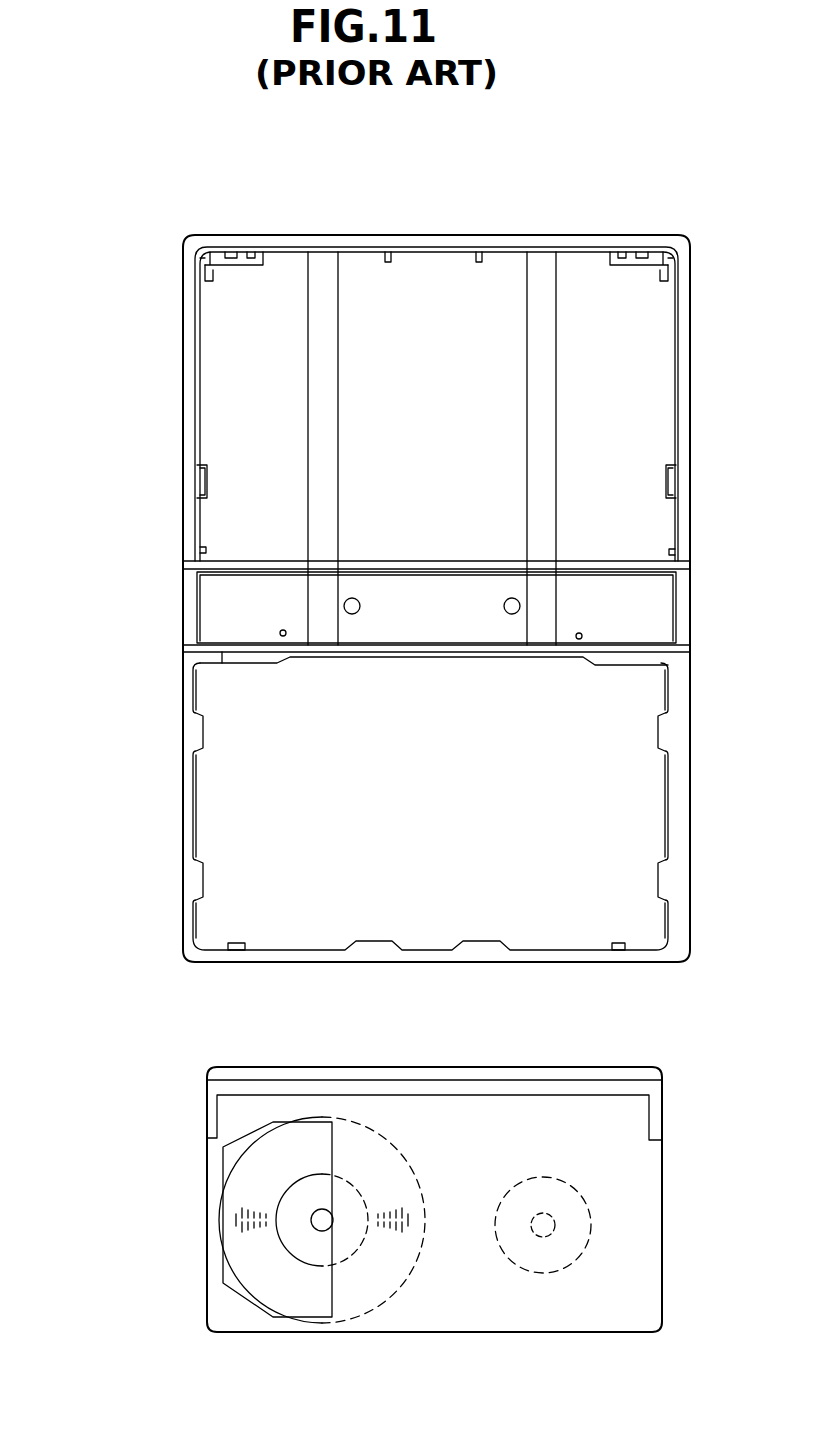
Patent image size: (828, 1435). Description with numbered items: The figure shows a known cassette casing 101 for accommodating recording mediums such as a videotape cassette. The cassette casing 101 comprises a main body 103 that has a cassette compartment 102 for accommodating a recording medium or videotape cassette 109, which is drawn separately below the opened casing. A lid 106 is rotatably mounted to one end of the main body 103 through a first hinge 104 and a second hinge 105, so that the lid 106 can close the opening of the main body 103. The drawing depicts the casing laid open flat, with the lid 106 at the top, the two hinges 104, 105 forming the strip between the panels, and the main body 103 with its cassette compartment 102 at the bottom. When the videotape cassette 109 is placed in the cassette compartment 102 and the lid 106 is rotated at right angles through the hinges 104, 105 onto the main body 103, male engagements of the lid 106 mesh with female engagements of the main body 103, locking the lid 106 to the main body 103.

The cassette casing 101 is at (172, 932).
The cassette compartment 102 is at (360, 843).
The main body 103 is at (185, 790).
The first hinge 104 is at (185, 650).
The second hinge 105 is at (185, 565).
The lid 106 is at (188, 420).
The videotape cassette 109 is at (205, 1170).